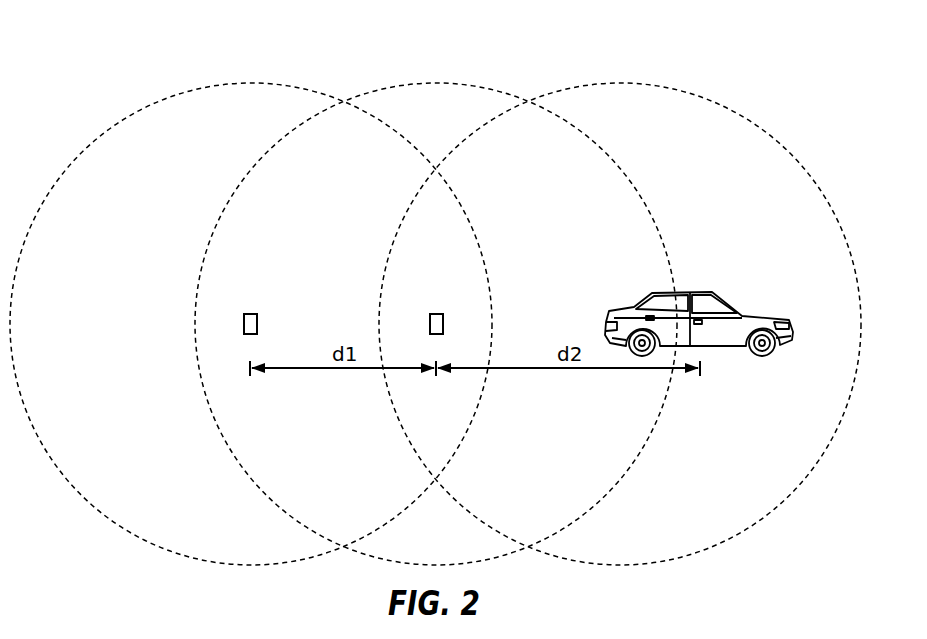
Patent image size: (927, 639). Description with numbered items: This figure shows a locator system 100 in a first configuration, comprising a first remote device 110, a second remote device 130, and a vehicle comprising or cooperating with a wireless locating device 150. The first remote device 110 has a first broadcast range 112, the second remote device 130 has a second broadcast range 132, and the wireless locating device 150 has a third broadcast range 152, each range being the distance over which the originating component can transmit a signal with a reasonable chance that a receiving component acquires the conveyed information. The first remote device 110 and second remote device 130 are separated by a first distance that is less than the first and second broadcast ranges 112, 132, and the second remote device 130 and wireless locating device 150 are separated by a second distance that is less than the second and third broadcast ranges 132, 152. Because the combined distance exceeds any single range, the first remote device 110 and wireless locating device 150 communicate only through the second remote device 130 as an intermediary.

The locator system 100 is at (127, 47).
The first remote device 110 is at (251, 312).
The first broadcast range 112 is at (251, 82).
The second remote device 130 is at (437, 312).
The second broadcast range 132 is at (436, 82).
The wireless locating device 150 is at (622, 307).
The third broadcast range 152 is at (620, 82).